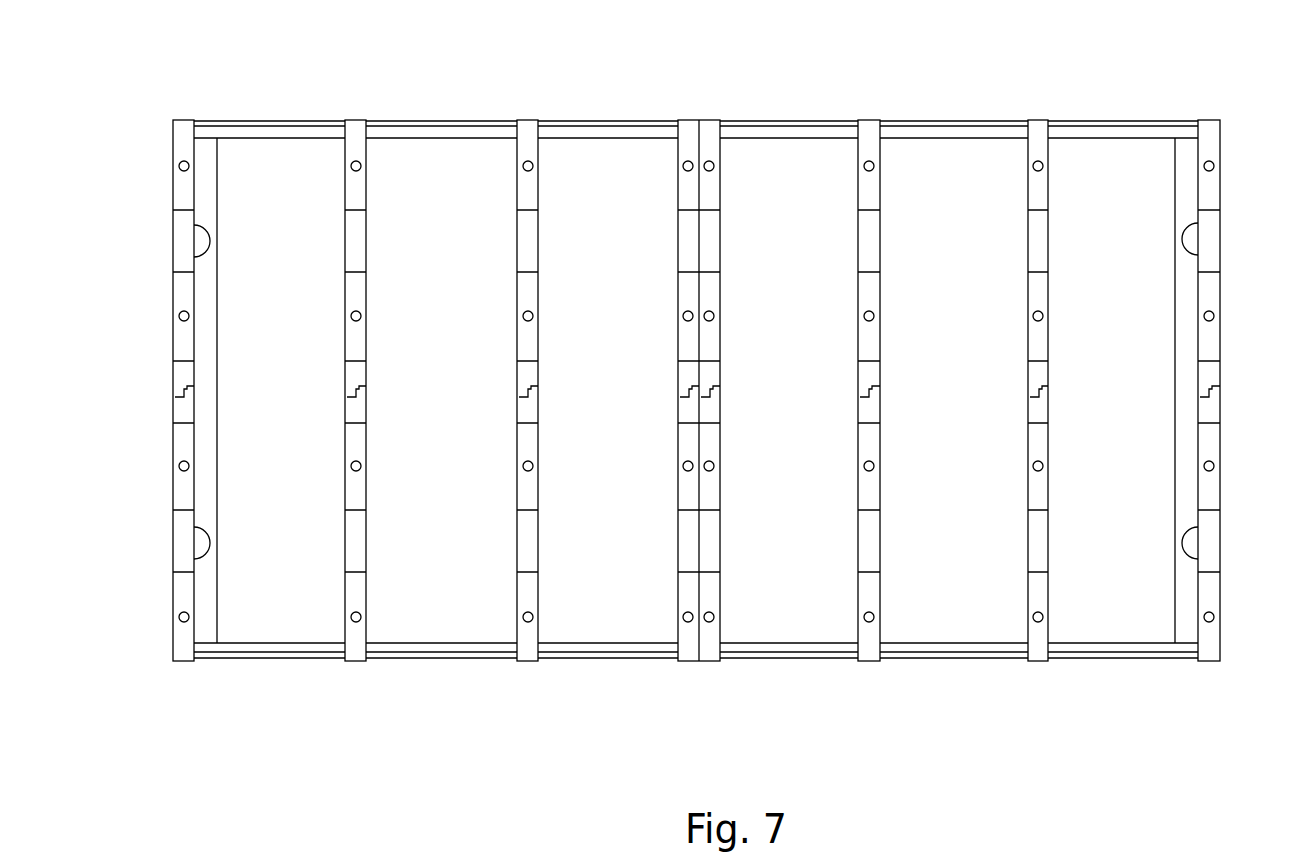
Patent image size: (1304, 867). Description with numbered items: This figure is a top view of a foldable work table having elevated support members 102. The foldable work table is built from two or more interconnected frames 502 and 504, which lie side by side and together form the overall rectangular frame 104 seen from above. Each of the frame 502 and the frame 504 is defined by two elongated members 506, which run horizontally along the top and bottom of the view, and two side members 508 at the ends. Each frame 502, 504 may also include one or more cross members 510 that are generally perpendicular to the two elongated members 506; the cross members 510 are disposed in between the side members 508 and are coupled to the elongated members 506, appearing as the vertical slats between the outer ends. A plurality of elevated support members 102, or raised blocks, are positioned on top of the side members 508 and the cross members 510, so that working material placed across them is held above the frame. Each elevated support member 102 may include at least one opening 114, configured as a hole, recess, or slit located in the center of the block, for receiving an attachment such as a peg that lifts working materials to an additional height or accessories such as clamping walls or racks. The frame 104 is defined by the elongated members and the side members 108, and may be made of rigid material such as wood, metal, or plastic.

The elevated support member 102 is at (386, 390).
The frame 104 is at (182, 105).
The side member 108 is at (197, 408).
The opening 114 is at (365, 316).
The frame 502 is at (445, 673).
The frame 504 is at (953, 672).
The elongated member 506 is at (452, 122).
The side member 508 is at (173, 408).
The cross member 510 is at (540, 407).